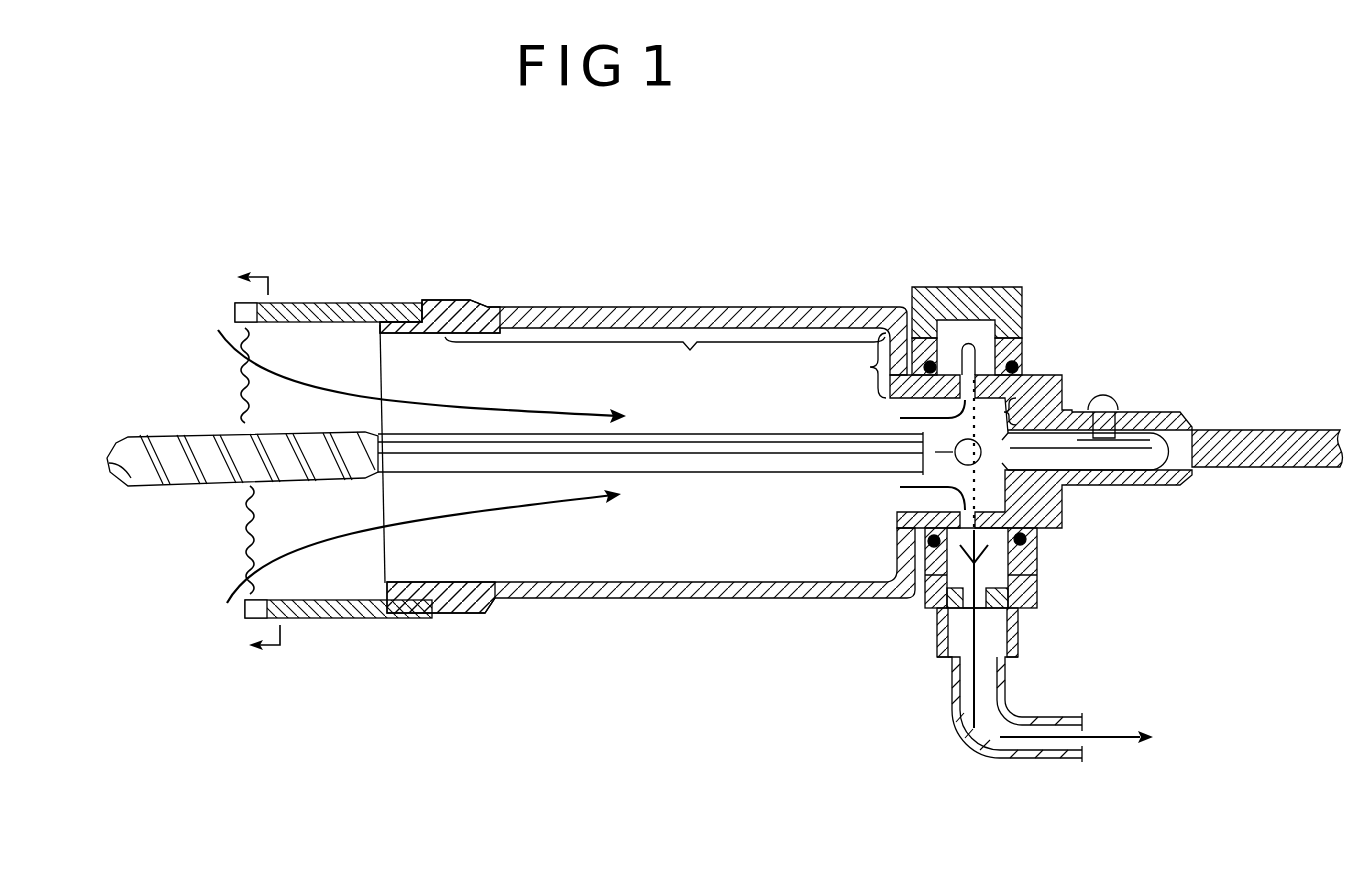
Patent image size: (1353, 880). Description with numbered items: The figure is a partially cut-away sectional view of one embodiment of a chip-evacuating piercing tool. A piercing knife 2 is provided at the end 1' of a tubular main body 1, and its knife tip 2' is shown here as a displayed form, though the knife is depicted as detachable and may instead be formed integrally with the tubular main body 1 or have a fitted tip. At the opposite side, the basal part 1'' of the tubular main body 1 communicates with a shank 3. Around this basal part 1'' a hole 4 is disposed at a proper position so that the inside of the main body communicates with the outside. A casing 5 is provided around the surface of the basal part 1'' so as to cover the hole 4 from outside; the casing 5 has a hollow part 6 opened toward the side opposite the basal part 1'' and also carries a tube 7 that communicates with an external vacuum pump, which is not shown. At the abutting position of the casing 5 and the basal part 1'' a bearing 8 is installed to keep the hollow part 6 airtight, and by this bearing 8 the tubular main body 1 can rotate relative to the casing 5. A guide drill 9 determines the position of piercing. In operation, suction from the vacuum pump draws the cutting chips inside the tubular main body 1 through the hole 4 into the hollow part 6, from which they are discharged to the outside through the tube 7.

The tubular main body 1 is at (617, 456).
The end of the tubular main body 1' is at (440, 404).
The basal part 1'' is at (1055, 430).
The piercing knife 2 is at (319, 320).
The knife tip 2' is at (289, 576).
The shank 3 is at (1207, 470).
The hole 4 is at (1000, 318).
The casing 5 is at (967, 285).
The hollow part 6 is at (918, 287).
The tube 7 is at (967, 695).
The bearing 8 is at (890, 302).
The guide drill 9 is at (246, 451).